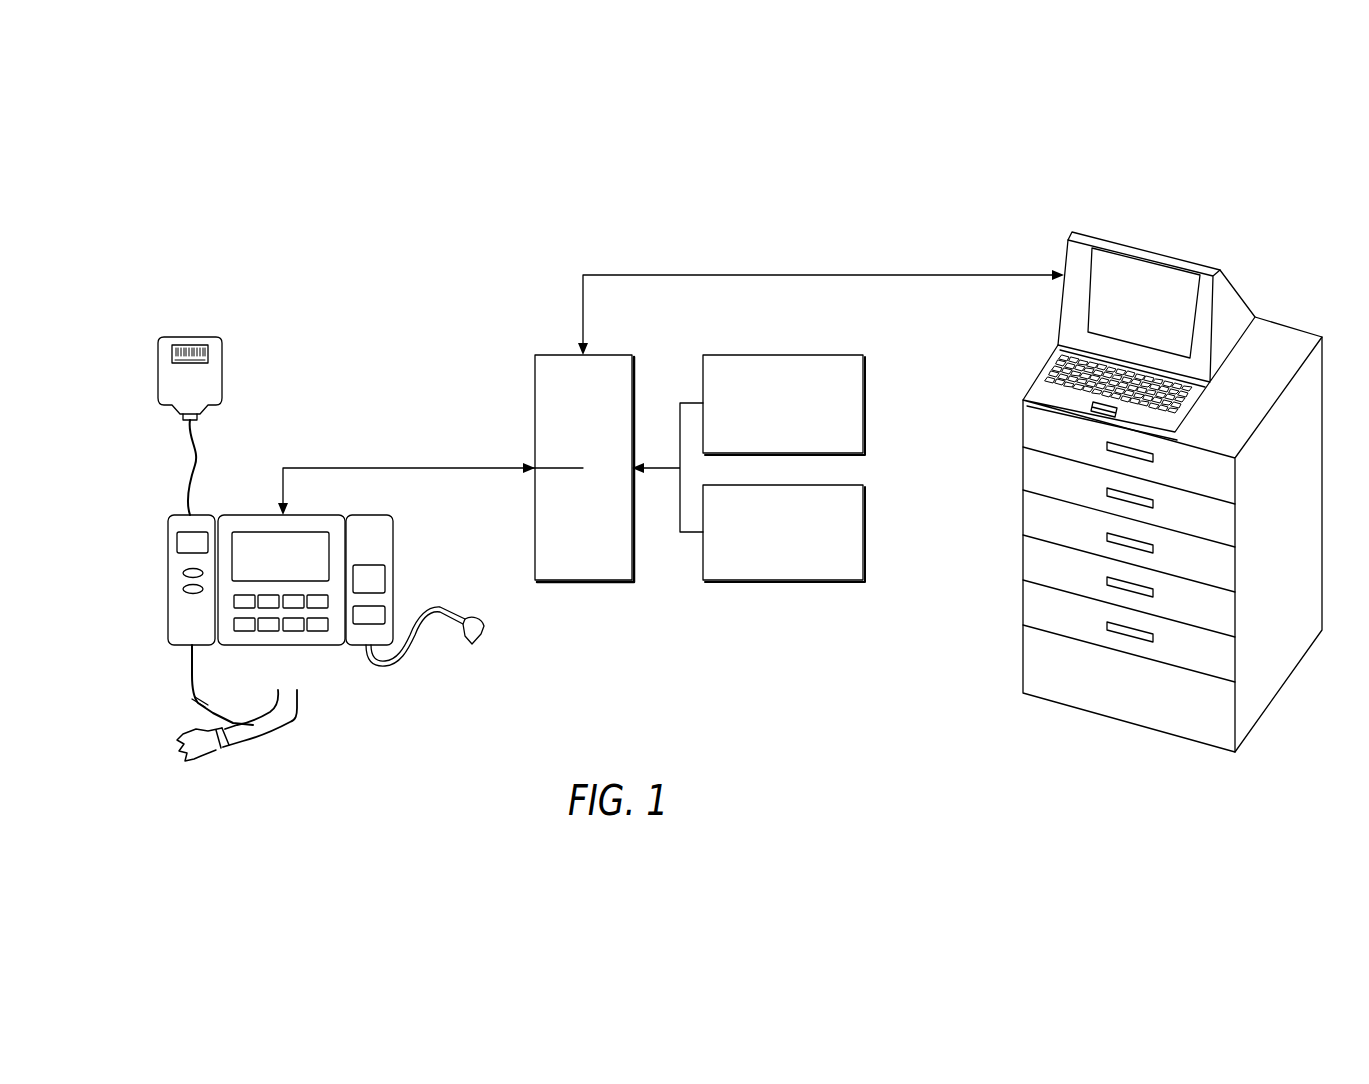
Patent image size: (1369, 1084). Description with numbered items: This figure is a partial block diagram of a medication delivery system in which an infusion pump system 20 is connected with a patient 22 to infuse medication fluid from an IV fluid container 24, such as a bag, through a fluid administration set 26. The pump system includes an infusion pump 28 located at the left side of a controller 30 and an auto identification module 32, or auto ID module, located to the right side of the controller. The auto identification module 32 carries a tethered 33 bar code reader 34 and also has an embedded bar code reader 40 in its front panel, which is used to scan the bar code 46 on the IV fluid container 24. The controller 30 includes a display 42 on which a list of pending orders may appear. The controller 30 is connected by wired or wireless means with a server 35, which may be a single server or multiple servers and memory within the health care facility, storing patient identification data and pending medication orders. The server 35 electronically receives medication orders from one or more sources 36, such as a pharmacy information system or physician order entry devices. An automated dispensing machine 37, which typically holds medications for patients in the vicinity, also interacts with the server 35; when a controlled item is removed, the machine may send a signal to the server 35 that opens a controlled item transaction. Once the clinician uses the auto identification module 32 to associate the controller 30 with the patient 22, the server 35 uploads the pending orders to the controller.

The infusion pump system 20 is at (381, 442).
The patient 22 is at (288, 722).
The IV fluid container 24 is at (222, 386).
The fluid administration set 26 is at (197, 452).
The infusion pump 28 is at (180, 608).
The controller 30 is at (272, 645).
The auto identification module 32 is at (386, 551).
The tether 33 is at (418, 635).
The bar code reader 34 is at (470, 625).
The server 35 is at (535, 383).
The medication order sources 36 is at (863, 407).
The automated dispensing machine 37 is at (1255, 273).
The embedded bar code reader 40 is at (373, 582).
The display 42 is at (313, 542).
The bar code 46 is at (210, 357).